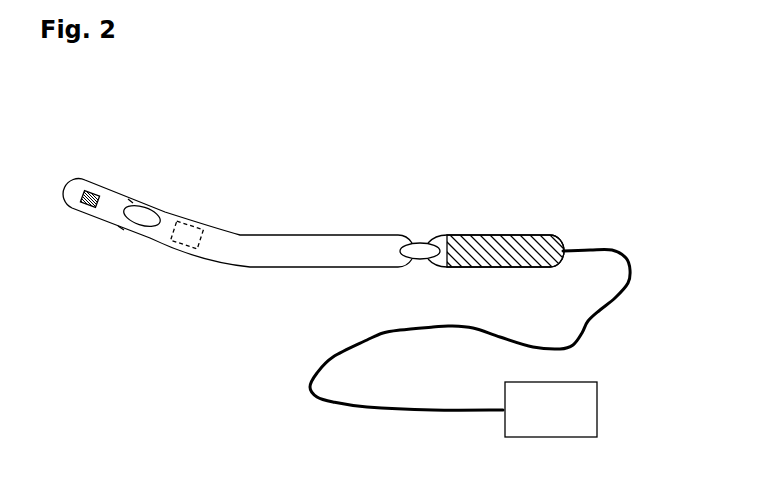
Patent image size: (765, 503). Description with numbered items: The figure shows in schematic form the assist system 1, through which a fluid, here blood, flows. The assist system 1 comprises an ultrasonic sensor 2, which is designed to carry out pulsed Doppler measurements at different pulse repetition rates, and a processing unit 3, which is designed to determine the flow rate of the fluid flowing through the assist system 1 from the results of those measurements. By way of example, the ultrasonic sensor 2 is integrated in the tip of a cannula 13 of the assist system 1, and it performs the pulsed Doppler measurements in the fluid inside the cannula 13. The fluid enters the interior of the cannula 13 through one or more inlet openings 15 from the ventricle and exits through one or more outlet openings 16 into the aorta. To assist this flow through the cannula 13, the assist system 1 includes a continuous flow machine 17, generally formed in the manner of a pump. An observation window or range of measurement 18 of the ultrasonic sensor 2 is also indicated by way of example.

The assist system 1 is at (562, 137).
The ultrasonic sensor 2 is at (95, 182).
The processing unit 3 is at (597, 410).
The cannula 13 is at (296, 250).
The inlet opening 15 is at (146, 208).
The outlet opening 16 is at (420, 243).
The continuous flow machine 17 is at (470, 245).
The range of measurement 18 is at (194, 222).